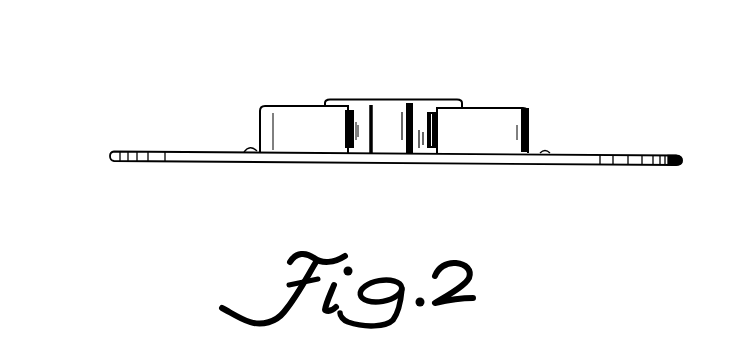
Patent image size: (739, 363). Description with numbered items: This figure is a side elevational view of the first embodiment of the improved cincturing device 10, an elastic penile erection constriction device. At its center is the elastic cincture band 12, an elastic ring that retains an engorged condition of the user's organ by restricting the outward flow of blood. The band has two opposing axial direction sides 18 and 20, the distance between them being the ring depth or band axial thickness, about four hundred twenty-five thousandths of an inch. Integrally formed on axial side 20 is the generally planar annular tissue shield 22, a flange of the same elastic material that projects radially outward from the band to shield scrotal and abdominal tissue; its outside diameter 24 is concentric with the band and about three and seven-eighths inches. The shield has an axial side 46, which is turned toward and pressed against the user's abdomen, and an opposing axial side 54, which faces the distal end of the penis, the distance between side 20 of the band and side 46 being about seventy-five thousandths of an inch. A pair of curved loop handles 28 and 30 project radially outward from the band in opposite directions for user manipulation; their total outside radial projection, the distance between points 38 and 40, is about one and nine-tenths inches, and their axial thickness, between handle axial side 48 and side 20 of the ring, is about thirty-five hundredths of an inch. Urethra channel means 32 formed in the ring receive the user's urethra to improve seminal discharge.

The cincturing device 10 is at (614, 57).
The elastic cincture band 12 is at (424, 100).
The axial side of cincture band 18 is at (363, 98).
The axial side of cincture band 20 is at (434, 152).
The tissue shield 22 is at (133, 150).
The outside diameter of tissue shield 24 is at (110, 155).
The curved loop handle 28 is at (531, 121).
The curved loop handle 30 is at (258, 128).
The urethra channel means 32 is at (386, 145).
The point of handle radial projection 38 is at (240, 152).
The point of handle radial projection 40 is at (541, 154).
The axial side of tissue shield 46 is at (411, 153).
The handle axial side 48 is at (498, 107).
The axial side of tissue shield 54 is at (634, 157).